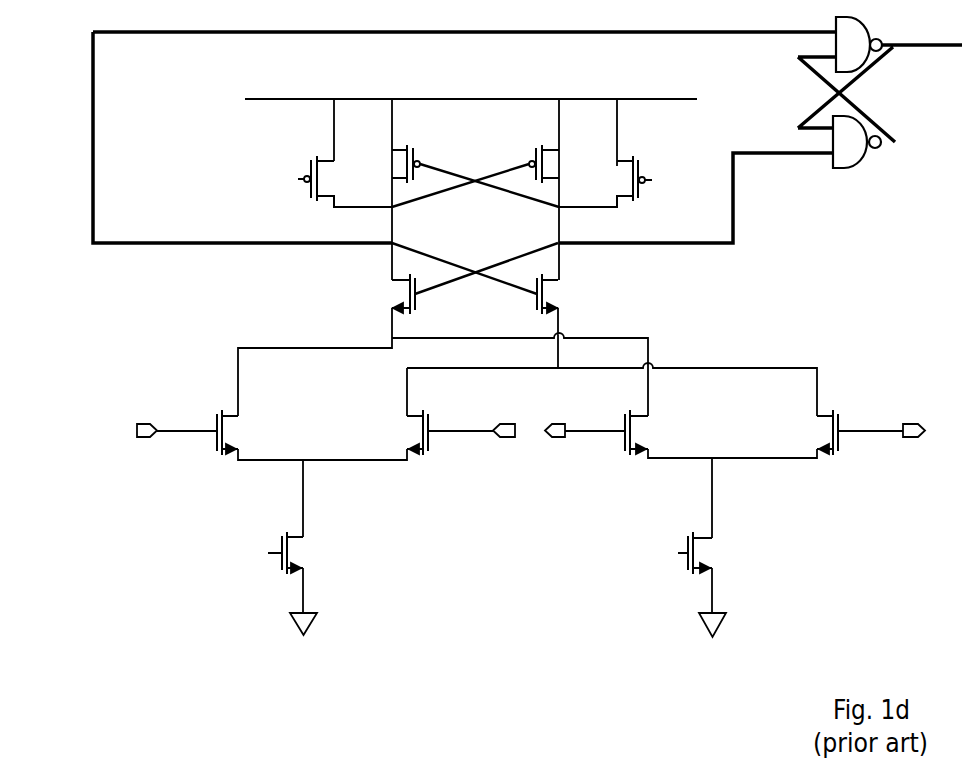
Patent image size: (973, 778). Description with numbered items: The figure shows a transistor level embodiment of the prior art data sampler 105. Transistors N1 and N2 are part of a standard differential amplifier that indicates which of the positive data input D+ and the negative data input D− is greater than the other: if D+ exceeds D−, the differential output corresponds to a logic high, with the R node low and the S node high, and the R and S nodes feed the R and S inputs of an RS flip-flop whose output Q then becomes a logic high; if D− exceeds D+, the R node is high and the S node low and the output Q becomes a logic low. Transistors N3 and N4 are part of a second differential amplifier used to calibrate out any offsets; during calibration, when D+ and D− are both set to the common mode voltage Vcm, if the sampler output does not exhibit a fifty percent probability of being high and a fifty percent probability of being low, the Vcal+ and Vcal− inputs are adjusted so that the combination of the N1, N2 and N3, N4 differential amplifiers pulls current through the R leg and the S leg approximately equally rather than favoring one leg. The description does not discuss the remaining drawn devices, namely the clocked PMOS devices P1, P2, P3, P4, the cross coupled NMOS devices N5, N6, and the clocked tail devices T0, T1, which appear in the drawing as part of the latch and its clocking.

The data sampler 105 is at (513, 373).
The PMOS latch transistor P1 is at (475, 174).
The PMOS latch transistor P2 is at (475, 174).
The PMOS precharge transistor P3 is at (345, 174).
The PMOS precharge transistor P4 is at (605, 175).
The NMOS latch transistor N5 is at (475, 280).
The NMOS latch transistor N6 is at (475, 280).
The transistor N1 is at (207, 432).
The transistor N2 is at (441, 432).
The transistor N3 is at (614, 432).
The transistor N4 is at (852, 432).
The NMOS clock tail transistor T0 is at (298, 583).
The NMOS clock tail transistor T1 is at (709, 584).